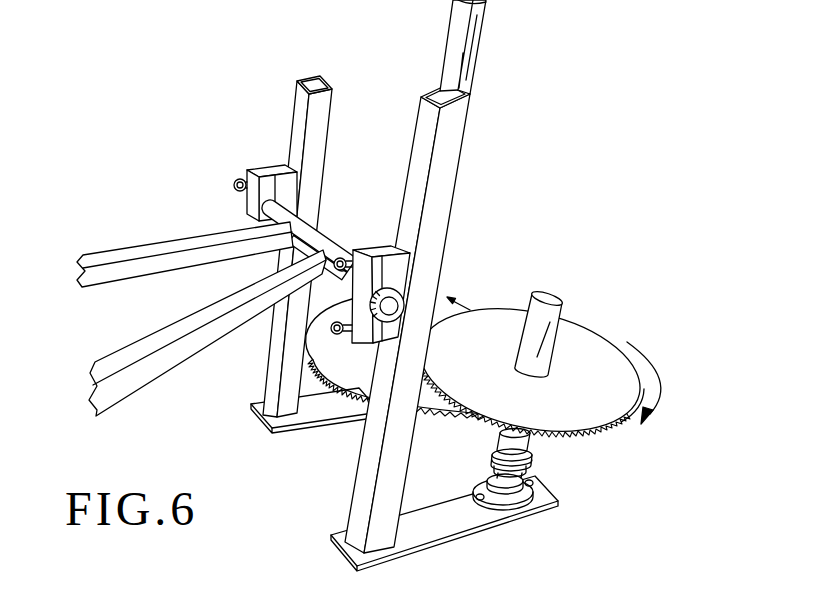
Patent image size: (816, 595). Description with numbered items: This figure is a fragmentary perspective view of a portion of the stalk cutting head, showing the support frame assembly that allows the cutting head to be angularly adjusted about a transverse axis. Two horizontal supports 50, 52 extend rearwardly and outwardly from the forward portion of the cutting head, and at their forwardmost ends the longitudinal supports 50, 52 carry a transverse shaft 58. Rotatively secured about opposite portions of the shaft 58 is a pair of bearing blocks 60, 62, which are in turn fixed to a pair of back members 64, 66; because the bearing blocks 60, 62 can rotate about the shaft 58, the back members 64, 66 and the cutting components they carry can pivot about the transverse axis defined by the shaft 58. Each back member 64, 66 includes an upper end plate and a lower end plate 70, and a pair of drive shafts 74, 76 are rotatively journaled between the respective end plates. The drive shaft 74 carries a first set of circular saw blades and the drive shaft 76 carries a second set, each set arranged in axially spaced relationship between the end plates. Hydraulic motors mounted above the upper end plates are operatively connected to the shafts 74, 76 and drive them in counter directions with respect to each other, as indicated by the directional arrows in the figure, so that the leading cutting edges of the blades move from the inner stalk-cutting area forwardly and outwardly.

The horizontal support 50 is at (197, 349).
The horizontal support 52 is at (184, 240).
The transverse shaft 58 is at (322, 238).
The bearing block 60 is at (398, 272).
The bearing block 62 is at (263, 170).
The back member 64 is at (452, 152).
The back member 66 is at (297, 110).
The lower end plate 70 is at (315, 415).
The drive shaft 74 is at (557, 330).
The drive shaft 76 is at (477, 62).